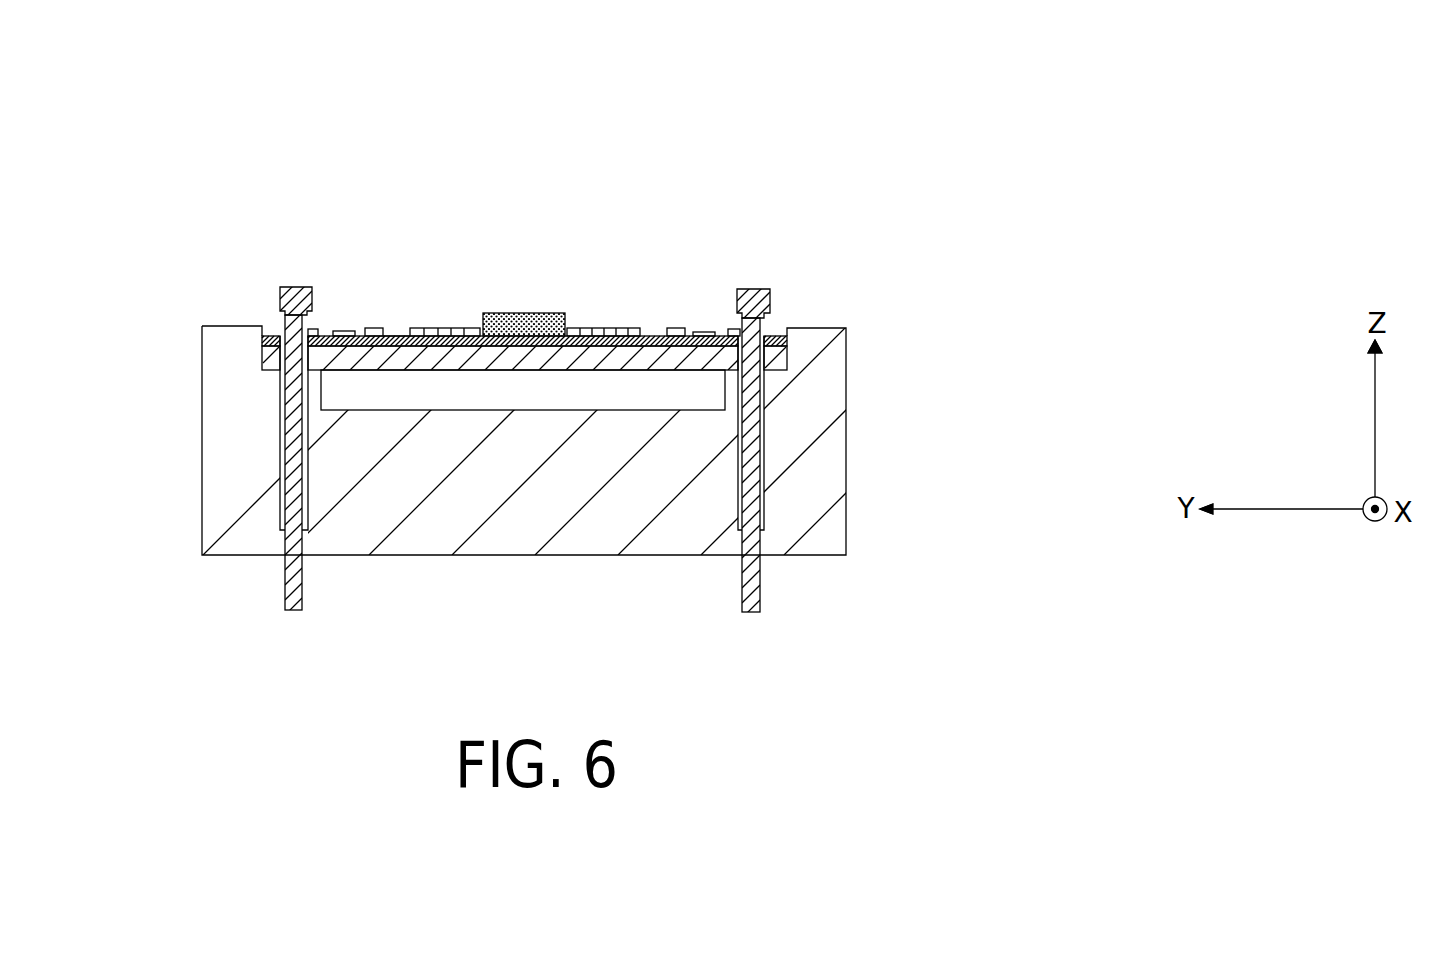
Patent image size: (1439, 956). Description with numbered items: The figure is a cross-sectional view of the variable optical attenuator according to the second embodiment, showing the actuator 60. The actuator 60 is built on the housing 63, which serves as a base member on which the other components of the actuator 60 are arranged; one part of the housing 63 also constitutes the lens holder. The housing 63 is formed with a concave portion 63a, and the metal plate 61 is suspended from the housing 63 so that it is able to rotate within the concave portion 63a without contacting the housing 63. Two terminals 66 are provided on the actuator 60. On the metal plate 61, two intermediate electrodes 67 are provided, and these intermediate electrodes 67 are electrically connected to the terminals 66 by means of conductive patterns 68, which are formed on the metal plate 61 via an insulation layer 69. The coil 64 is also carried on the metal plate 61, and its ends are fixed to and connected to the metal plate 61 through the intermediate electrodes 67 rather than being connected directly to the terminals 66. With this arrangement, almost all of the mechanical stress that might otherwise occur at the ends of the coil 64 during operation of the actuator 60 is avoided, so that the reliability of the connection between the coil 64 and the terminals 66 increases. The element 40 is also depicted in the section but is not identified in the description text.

The actuator 60 is at (668, 160).
The vibrating gyro element 40 is at (525, 313).
The metal plate 61 is at (527, 355).
The housing 63 is at (800, 540).
The concave portion 63a is at (425, 393).
The coil 64 is at (442, 327).
The terminals 66 is at (297, 287).
The intermediate electrodes 67 is at (372, 327).
The conductive patterns 68 is at (343, 330).
The insulation layer 69 is at (397, 335).